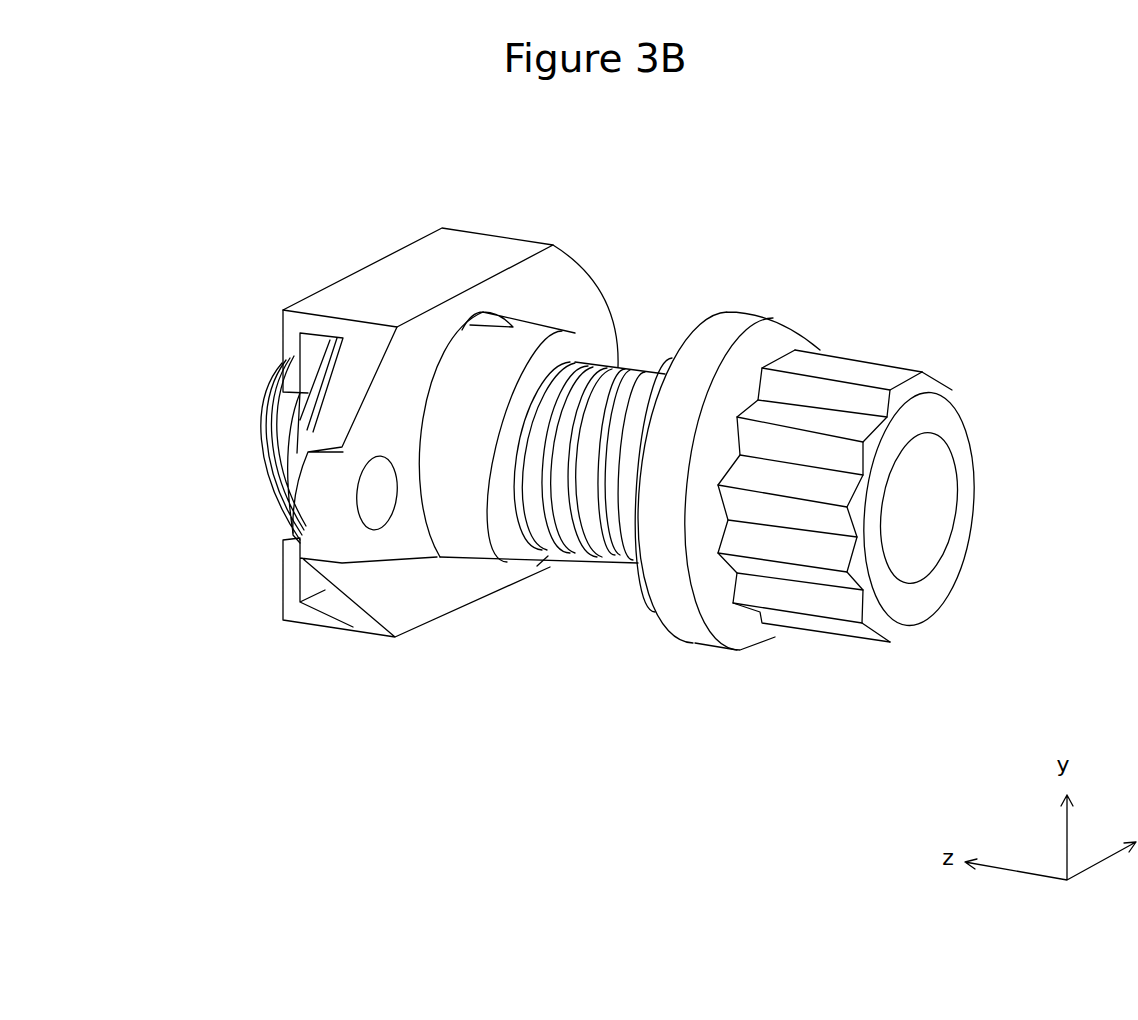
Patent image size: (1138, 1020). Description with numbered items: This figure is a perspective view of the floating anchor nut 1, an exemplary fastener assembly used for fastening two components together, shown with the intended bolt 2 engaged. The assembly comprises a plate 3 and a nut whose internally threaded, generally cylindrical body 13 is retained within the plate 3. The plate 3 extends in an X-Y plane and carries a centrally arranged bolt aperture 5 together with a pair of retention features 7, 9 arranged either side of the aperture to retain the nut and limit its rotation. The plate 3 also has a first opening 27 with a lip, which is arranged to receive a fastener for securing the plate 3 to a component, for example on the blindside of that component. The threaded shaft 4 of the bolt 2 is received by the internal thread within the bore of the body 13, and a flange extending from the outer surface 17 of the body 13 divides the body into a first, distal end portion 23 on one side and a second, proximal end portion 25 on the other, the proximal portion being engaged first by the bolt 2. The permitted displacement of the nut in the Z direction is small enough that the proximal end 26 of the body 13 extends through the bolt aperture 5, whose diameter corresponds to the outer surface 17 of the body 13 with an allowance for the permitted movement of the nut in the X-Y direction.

The floating anchor nut 1 is at (356, 172).
The bolt 2 is at (818, 260).
The plate 3 is at (540, 201).
The threaded shaft 4 is at (643, 373).
The bolt aperture 5 is at (443, 567).
The retention feature 7 is at (307, 622).
The retention feature 9 is at (397, 263).
The cylindrical body 13 is at (502, 342).
The outer surface 17 is at (470, 562).
The first, distal end portion 23 is at (236, 420).
The second, proximal end portion 25 is at (557, 580).
The proximal end 26 is at (510, 550).
The first opening 27 is at (370, 508).